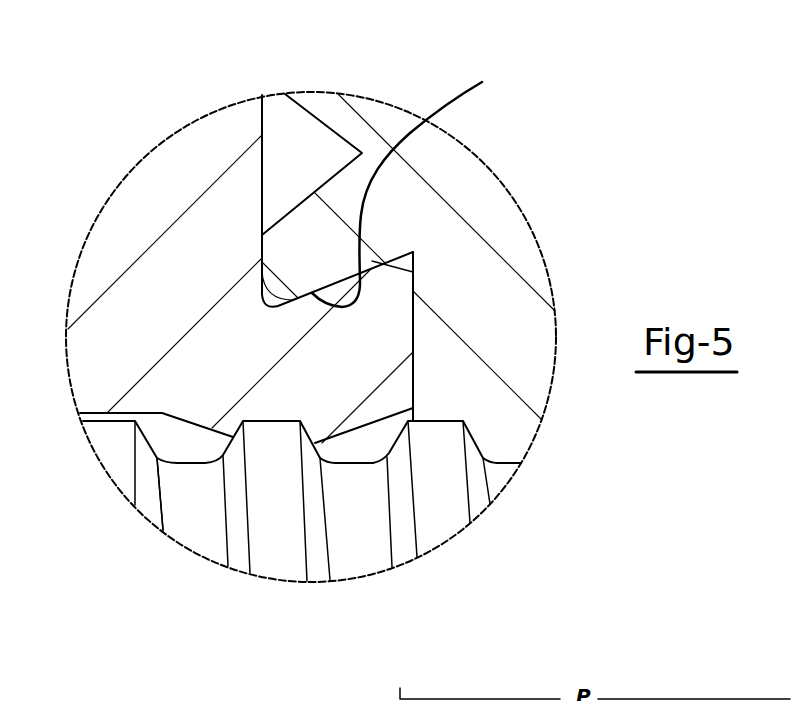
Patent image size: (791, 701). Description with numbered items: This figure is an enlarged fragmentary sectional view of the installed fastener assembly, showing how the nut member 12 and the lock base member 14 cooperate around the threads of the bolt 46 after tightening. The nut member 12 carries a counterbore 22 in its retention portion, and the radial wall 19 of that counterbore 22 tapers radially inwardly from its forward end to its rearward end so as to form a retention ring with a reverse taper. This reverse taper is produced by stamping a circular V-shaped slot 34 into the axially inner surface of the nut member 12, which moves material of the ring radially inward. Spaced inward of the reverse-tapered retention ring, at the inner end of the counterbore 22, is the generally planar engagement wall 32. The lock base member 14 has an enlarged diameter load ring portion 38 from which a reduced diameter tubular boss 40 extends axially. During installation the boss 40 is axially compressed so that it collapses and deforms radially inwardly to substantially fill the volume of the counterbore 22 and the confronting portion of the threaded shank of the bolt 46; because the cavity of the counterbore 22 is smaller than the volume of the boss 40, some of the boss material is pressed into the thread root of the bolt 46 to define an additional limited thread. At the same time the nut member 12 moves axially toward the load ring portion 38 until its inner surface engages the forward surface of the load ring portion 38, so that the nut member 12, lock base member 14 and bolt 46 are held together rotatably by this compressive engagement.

The nut member 12 is at (411, 86).
The lock base member 14 is at (149, 203).
The radial wall 19 is at (408, 189).
The counterbore 22 is at (404, 270).
The engagement wall 32 is at (418, 366).
The V-shaped slot 34 is at (310, 130).
The load ring portion 38 is at (277, 553).
The boss 40 is at (397, 308).
The bolt 46 is at (165, 530).